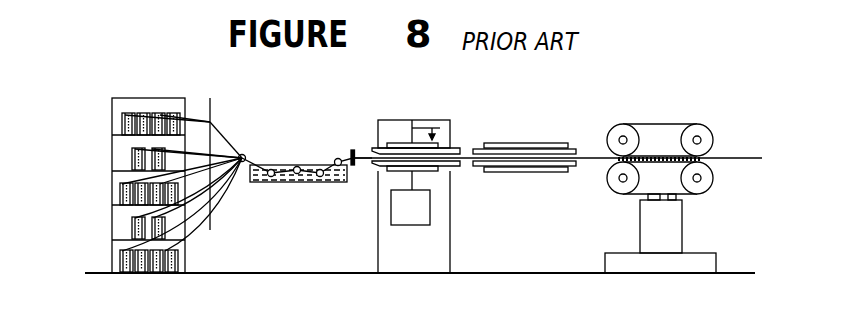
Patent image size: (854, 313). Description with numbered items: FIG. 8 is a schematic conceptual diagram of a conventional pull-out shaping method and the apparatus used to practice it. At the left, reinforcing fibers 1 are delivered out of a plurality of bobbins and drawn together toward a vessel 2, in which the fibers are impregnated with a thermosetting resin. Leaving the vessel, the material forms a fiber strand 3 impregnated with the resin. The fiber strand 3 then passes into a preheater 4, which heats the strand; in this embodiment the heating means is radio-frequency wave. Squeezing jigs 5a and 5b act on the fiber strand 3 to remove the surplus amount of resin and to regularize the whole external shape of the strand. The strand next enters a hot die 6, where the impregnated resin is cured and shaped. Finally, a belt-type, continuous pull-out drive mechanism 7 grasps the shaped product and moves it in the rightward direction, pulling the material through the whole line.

The reinforcing fibers 1 is at (120, 200).
The vessel 2 is at (272, 165).
The fiber strand 3 is at (359, 148).
The preheater 4 is at (378, 247).
The squeezing jig 5a is at (392, 171).
The squeezing jig 5b is at (475, 174).
The hot die 6 is at (525, 173).
The belt-type continuous pull-out drive mechanism 7 is at (620, 196).